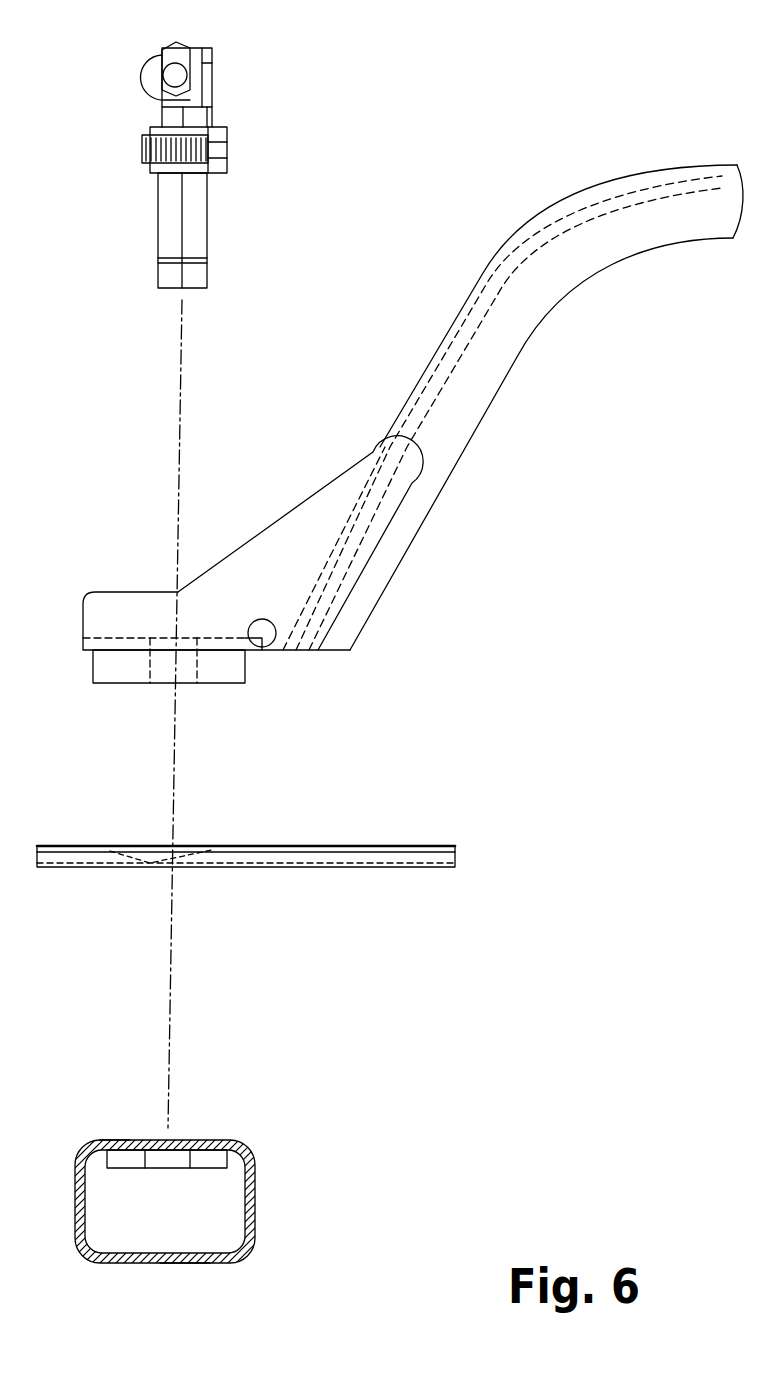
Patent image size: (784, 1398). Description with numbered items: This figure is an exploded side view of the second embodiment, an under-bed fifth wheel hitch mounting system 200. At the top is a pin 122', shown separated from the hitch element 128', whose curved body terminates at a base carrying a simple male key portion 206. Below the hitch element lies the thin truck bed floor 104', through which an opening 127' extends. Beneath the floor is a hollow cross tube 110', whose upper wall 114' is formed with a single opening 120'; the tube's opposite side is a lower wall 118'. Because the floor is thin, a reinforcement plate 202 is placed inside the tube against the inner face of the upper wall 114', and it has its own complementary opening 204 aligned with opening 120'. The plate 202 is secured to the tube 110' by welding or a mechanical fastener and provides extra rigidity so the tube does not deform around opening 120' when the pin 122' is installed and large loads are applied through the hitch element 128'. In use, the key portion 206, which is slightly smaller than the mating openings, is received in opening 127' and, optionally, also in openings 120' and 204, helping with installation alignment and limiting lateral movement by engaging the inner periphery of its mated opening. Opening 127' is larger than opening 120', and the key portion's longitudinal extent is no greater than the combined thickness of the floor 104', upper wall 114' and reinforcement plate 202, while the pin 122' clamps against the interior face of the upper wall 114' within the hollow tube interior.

The under-bed fifth wheel hitch mounting system 200 is at (510, 77).
The pin 122' is at (232, 162).
The hitch element 128' is at (413, 407).
The key portion 206 is at (245, 675).
The floor 104' is at (266, 890).
The opening 127' is at (194, 827).
The tube 110' is at (214, 1183).
The upper wall 114' is at (86, 1111).
The bottom wall 118' is at (193, 1291).
The opening 120' is at (186, 1121).
The opening 204 is at (153, 1163).
The reinforcement plate 202 is at (210, 1175).